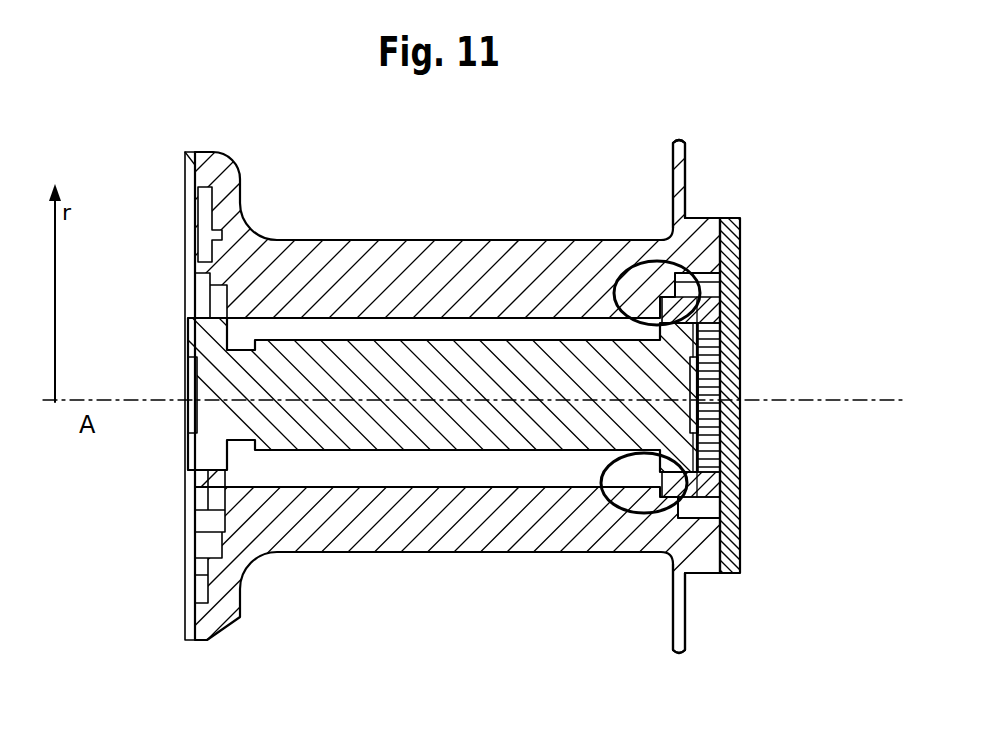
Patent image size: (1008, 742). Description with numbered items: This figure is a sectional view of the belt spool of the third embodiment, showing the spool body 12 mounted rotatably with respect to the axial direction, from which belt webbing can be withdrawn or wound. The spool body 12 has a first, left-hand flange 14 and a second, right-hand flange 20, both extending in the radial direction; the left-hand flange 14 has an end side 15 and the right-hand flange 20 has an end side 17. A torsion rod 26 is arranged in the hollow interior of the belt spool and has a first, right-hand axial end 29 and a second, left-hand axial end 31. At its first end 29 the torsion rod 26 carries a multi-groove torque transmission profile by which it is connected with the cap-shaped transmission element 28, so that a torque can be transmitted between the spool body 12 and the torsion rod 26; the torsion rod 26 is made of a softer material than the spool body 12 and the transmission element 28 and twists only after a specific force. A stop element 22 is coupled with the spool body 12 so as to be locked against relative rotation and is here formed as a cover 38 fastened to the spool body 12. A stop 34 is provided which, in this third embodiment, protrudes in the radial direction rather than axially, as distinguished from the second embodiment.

The spool body 12 is at (401, 258).
The left-hand flange 14 is at (185, 621).
The end side 15 is at (230, 520).
The end side 17 is at (700, 262).
The right-hand flange 20 is at (672, 622).
The stop element 22 is at (738, 387).
The torsion rod 26 is at (428, 436).
The transmission element 28 is at (712, 481).
The first axial end 29 is at (688, 458).
The second axial end 31 is at (212, 357).
The stop 34 is at (738, 287).
The cover 38 is at (738, 543).